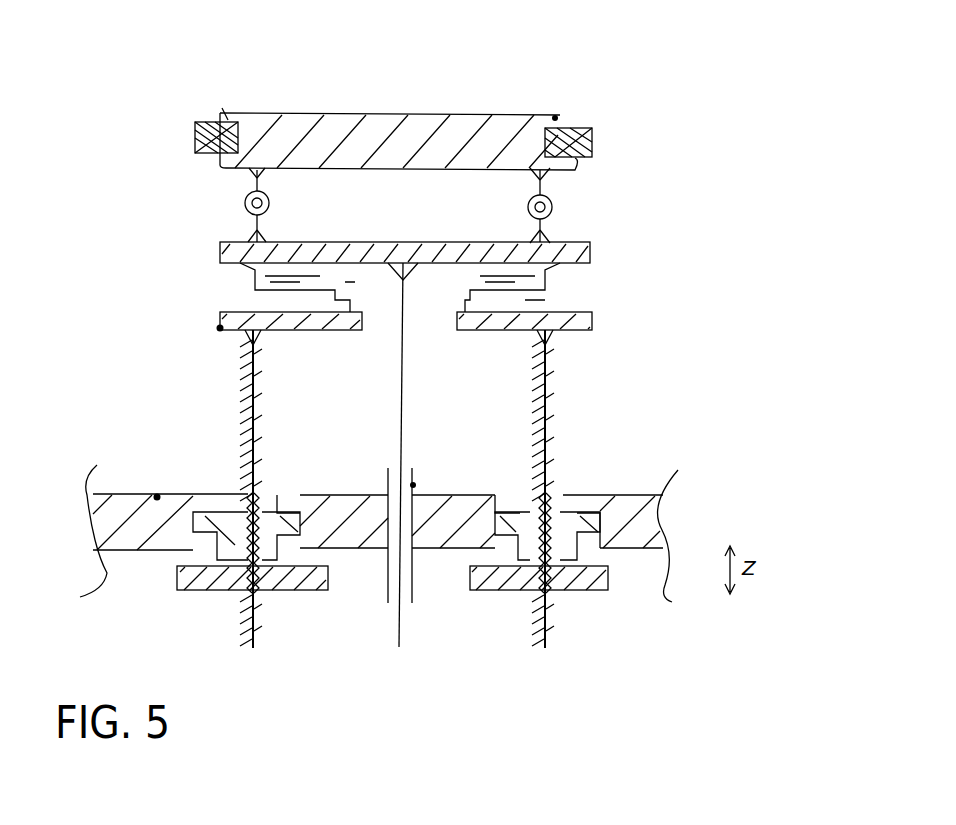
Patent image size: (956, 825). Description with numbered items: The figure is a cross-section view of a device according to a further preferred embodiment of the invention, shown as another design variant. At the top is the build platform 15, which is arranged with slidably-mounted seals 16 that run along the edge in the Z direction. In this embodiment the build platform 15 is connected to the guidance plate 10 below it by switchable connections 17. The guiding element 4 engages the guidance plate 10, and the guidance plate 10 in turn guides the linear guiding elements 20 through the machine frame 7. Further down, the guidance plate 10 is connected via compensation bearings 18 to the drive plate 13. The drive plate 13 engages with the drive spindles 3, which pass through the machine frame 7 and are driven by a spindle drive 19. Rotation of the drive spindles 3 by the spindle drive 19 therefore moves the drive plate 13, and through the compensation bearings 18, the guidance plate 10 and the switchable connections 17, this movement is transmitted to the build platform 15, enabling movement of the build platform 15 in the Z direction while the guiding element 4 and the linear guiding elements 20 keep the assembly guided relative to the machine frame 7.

The build platform 15 is at (555, 118).
The slidably-mounted seals 16 is at (593, 156).
The switchable connections 17 is at (552, 207).
The guidance plate 10 is at (590, 262).
The compensation bearings 18 is at (525, 300).
The drive plate 13 is at (220, 328).
The drive spindles 3 is at (260, 420).
The guiding element 4 is at (403, 390).
The linear guiding elements 20 is at (413, 484).
The machine frame 7 is at (157, 497).
The spindle drive 19 is at (235, 512).